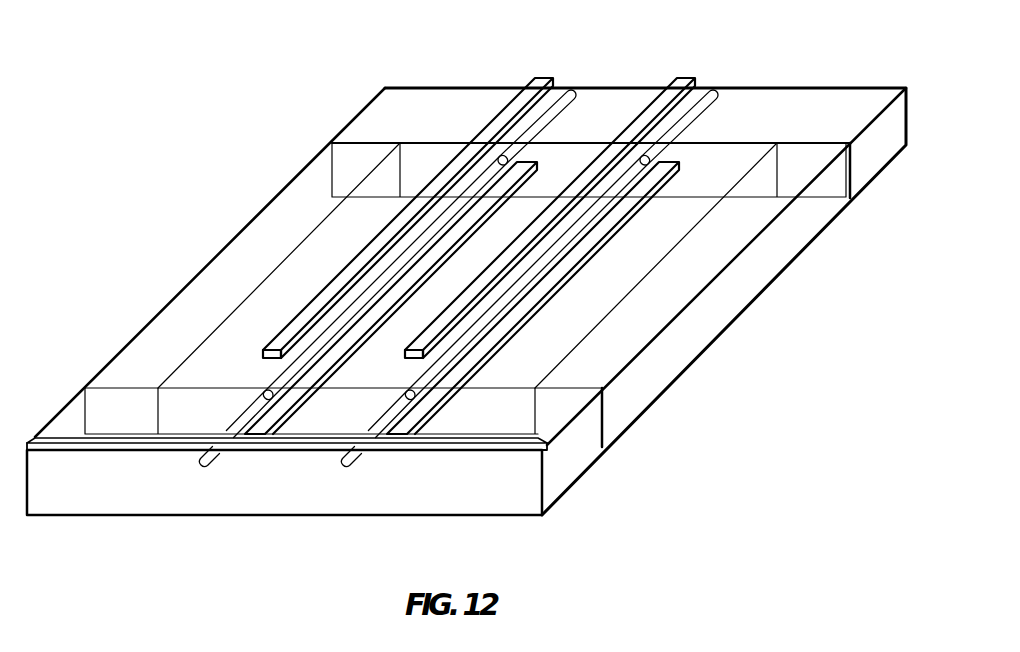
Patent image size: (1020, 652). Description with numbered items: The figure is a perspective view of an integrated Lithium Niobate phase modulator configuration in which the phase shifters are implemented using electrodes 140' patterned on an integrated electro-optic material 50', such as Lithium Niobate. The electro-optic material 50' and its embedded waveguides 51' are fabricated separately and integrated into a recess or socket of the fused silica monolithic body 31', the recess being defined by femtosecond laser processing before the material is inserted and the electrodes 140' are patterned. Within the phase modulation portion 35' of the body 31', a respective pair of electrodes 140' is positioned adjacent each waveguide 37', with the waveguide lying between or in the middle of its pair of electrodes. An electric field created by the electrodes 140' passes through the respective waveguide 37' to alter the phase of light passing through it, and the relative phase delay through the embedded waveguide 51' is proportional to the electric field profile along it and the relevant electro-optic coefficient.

The monolithic body 31' is at (474, 277).
The phase modulation portion 35' is at (287, 268).
The waveguide 37' is at (579, 244).
The electro-optic material 50' is at (408, 187).
The embedded waveguide 51' is at (388, 241).
The electrodes 140' is at (541, 228).